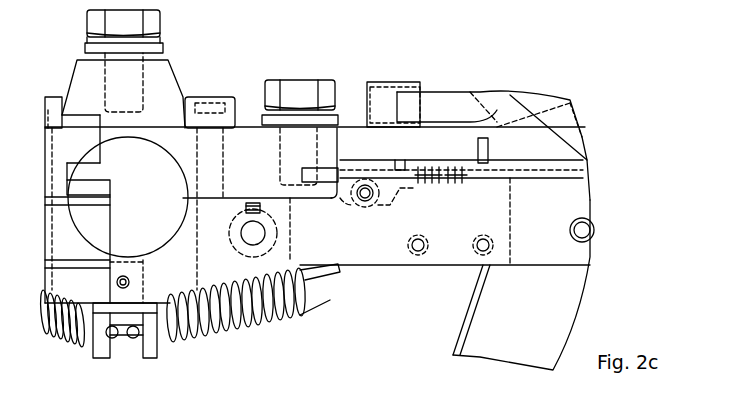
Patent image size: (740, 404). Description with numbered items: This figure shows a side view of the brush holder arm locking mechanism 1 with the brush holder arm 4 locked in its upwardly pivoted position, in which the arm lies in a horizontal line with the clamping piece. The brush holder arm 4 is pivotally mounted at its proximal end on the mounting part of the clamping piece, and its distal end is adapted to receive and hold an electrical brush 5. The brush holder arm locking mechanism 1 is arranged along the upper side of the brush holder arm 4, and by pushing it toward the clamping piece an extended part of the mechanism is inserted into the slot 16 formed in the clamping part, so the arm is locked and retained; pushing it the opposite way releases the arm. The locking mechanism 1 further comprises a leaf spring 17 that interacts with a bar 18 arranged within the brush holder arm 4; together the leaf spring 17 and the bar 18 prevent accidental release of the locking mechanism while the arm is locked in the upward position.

The brush holder arm locking mechanism 1 is at (492, 142).
The brush holder arm 4 is at (513, 213).
The electrical brush 5 is at (204, 126).
The slot 16 is at (322, 165).
The leaf spring 17 is at (396, 199).
The bar 18 is at (358, 212).